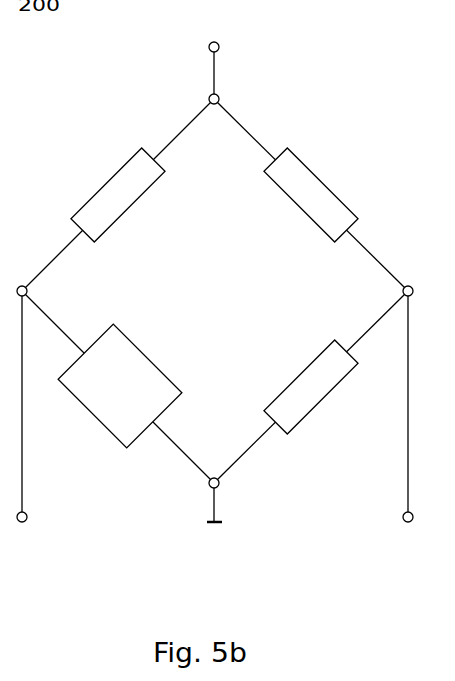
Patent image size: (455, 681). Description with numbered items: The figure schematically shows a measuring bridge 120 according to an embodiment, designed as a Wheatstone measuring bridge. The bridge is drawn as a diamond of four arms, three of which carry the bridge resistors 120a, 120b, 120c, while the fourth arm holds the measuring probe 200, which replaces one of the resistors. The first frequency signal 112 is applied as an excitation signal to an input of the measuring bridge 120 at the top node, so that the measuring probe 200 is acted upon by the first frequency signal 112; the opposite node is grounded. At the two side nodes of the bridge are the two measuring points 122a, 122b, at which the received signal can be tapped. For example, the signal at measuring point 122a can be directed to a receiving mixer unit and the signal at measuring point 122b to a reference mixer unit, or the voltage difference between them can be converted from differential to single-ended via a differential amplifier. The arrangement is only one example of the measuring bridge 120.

The first frequency signal 112 is at (192, 66).
The measuring bridge 120 is at (301, 69).
The bridge resistor 120a is at (131, 195).
The bridge resistor 120b is at (298, 195).
The bridge resistor 120c is at (300, 387).
The measuring probe 200 is at (138, 399).
The measuring point 122a is at (51, 412).
The measuring point 122b is at (380, 413).